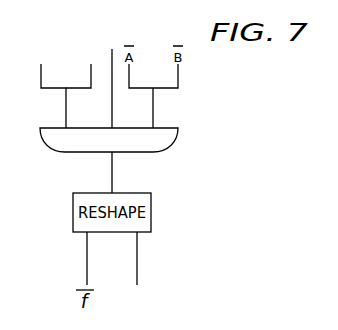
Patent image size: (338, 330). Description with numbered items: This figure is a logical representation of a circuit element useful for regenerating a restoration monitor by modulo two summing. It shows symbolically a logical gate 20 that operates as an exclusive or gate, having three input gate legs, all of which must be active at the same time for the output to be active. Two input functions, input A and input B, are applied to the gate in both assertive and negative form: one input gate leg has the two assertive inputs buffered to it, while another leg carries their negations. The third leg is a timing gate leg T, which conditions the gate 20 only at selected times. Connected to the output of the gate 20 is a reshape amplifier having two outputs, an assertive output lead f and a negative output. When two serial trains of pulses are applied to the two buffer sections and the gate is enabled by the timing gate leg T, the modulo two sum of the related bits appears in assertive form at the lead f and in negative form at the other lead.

The logical gate 20 is at (162, 147).
The input function A is at (51, 89).
The input function B is at (80, 69).
The timing gate leg T is at (111, 81).
The assertive output lead f is at (135, 272).